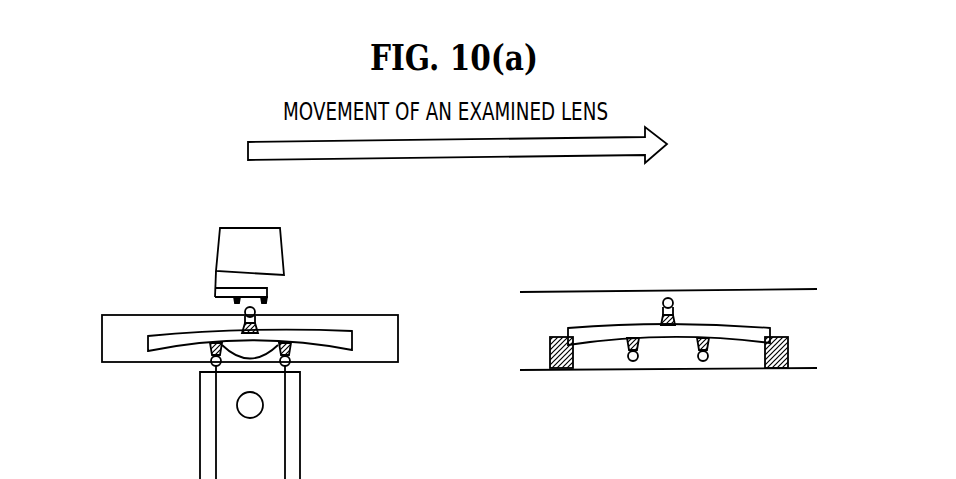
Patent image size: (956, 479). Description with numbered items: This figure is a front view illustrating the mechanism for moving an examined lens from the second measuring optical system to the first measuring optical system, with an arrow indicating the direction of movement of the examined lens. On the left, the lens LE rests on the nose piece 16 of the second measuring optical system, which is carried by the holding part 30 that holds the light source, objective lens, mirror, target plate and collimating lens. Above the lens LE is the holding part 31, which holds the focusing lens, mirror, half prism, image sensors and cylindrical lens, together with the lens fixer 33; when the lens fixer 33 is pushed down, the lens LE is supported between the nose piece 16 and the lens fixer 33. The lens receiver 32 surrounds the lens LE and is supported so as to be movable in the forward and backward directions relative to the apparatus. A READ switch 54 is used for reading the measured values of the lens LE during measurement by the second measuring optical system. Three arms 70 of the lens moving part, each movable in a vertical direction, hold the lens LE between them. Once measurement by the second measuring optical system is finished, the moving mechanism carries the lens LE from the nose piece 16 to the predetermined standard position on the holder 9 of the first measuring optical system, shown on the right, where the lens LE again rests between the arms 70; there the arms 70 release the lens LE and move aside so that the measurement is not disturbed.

The holding part 31 is at (228, 249).
The lens fixer 33 is at (267, 291).
The lens receiver 32 is at (117, 345).
The lens LE is at (185, 338).
The arms 70 is at (285, 344).
The nose piece 16 is at (233, 365).
The holding part 30 is at (207, 445).
The READ switch 54 is at (252, 407).
The holder 9 is at (552, 353).